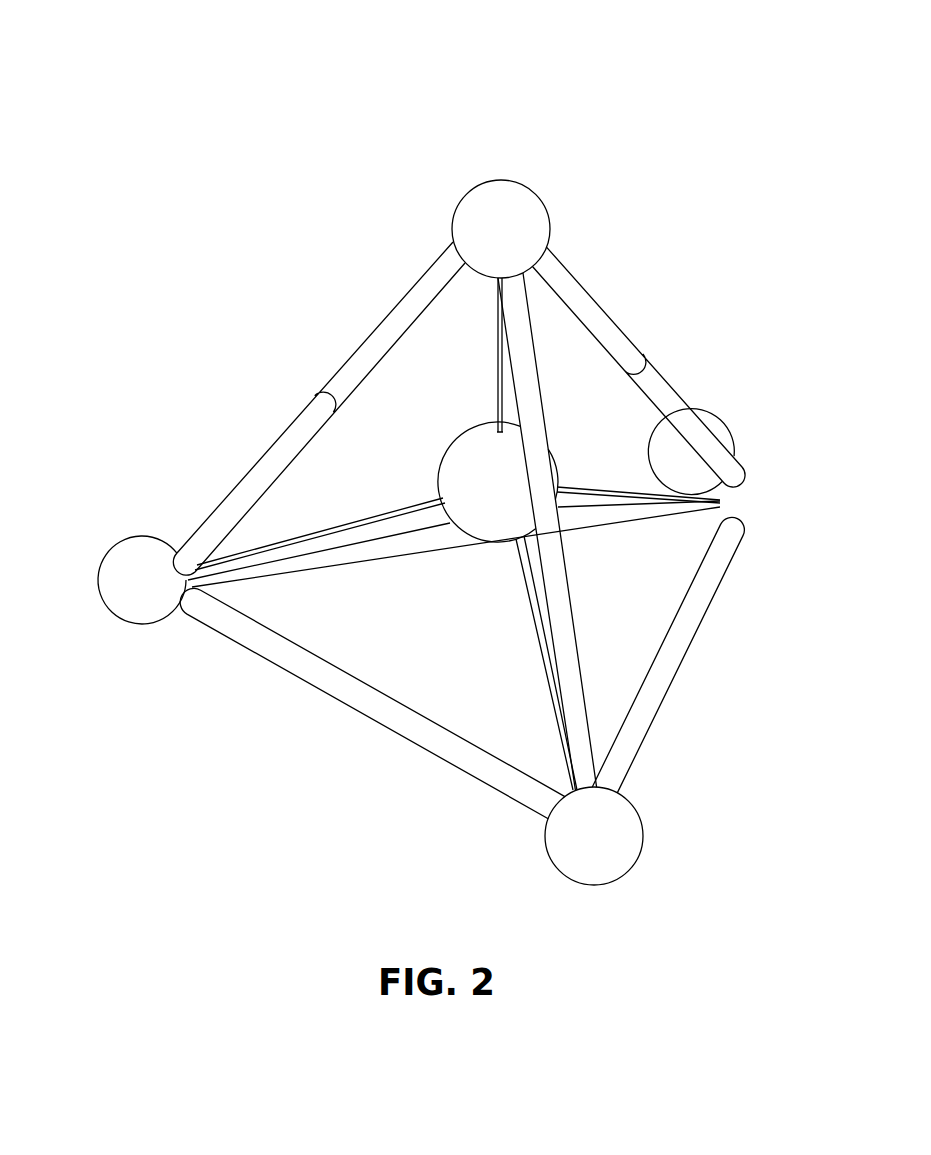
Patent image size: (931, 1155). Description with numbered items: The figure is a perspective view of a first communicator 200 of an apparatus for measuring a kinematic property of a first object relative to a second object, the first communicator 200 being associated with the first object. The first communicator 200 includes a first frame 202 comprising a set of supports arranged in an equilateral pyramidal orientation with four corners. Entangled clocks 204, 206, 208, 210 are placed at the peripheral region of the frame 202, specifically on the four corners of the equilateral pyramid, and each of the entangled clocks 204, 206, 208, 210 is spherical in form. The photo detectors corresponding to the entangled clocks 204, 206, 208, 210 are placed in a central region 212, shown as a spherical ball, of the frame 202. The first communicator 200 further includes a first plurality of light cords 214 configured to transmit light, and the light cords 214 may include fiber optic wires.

The first communicator 200 is at (487, 72).
The first frame 202 is at (328, 383).
The entangled clock 204 is at (762, 460).
The entangled clock 206 is at (632, 845).
The entangled clock 208 is at (143, 545).
The entangled clock 210 is at (506, 215).
The central region 212 is at (472, 450).
The first plurality of light cords 214 is at (497, 385).